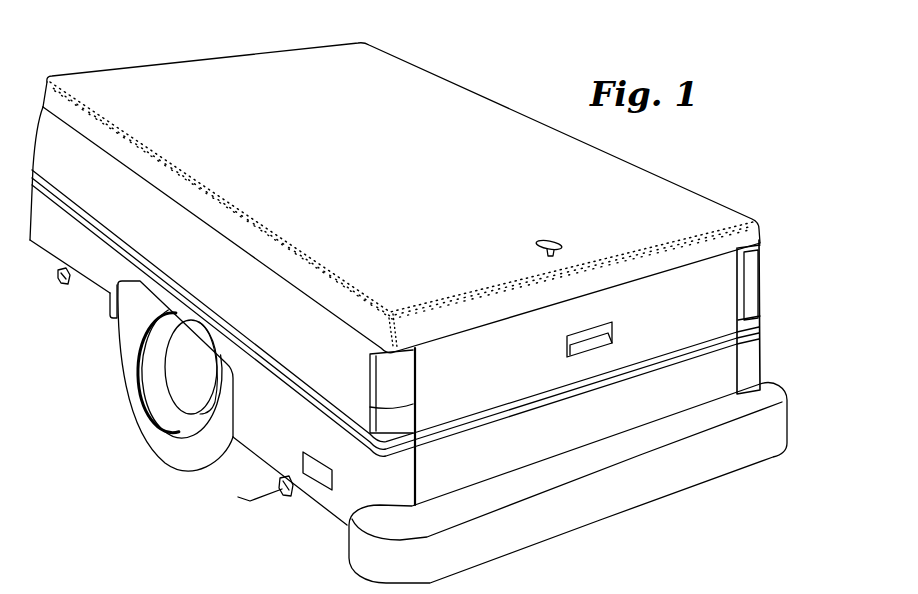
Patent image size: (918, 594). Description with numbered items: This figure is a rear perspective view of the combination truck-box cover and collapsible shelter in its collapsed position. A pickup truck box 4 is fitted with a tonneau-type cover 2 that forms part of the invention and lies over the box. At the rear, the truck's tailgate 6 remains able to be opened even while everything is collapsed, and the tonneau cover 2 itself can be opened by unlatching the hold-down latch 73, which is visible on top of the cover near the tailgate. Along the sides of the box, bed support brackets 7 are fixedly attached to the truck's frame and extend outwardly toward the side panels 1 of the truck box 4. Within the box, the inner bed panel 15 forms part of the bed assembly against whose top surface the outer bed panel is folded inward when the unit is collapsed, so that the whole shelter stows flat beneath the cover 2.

The side panels 1 is at (95, 287).
The tonneau-type cover 2 is at (487, 101).
The pickup truck box 4 is at (772, 362).
The tailgate 6 is at (720, 292).
The bed support brackets 7 is at (67, 287).
The inner bed panel 15 is at (231, 489).
The hold-down latch 73 is at (557, 243).